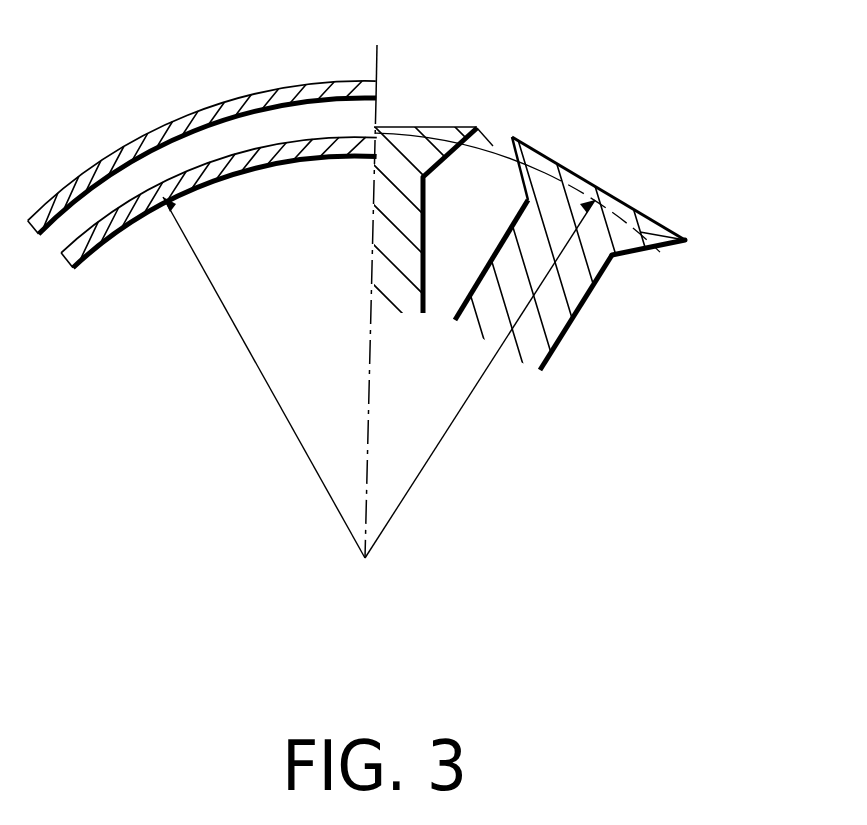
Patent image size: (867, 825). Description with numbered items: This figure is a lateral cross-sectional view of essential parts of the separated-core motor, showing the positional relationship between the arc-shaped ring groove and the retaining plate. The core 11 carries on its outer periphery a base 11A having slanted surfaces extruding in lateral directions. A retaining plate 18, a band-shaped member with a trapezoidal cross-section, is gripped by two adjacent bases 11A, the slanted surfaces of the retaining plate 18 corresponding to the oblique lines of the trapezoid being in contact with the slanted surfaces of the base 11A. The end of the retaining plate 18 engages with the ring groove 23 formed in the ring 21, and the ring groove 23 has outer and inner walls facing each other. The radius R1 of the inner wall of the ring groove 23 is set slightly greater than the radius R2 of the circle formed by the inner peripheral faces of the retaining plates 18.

The ring 21 is at (93, 168).
The ring groove 23 is at (90, 208).
The core 11 is at (553, 357).
The base 11A is at (657, 247).
The retaining plate 18 is at (487, 147).
The radius of the inner wall of the ring groove R1 is at (264, 377).
The radius of the circle formed by the inner peripheral faces of the retaining plate R2 is at (480, 379).